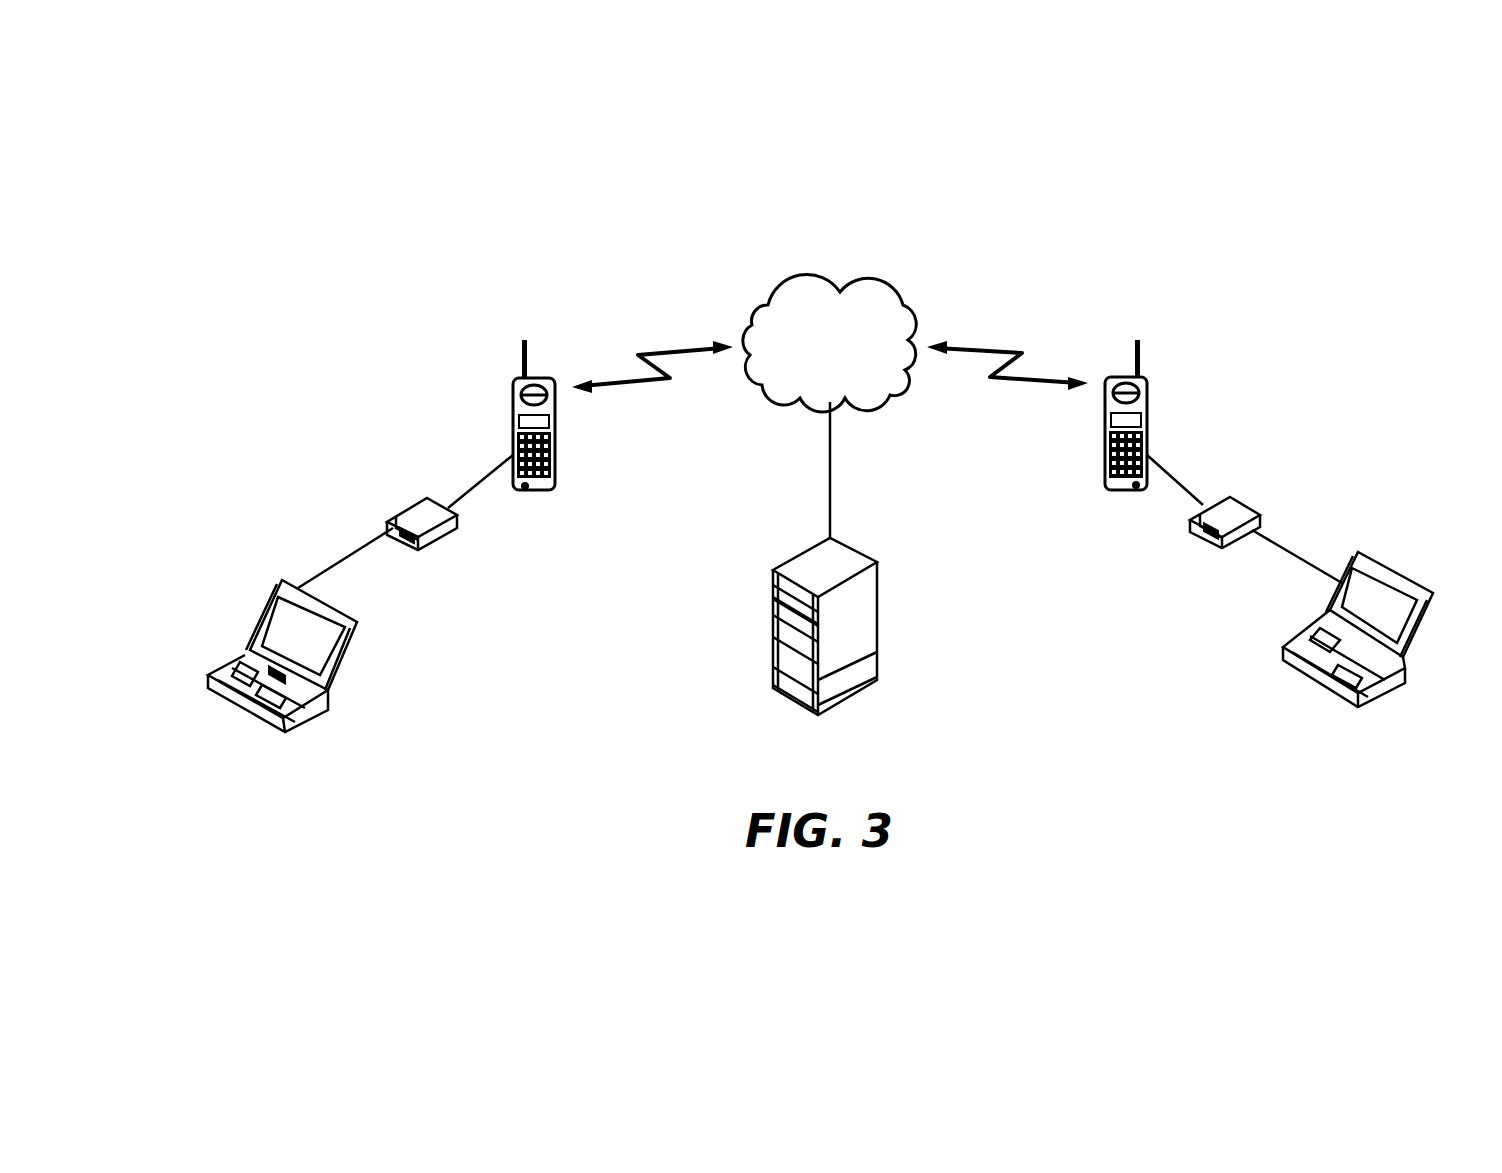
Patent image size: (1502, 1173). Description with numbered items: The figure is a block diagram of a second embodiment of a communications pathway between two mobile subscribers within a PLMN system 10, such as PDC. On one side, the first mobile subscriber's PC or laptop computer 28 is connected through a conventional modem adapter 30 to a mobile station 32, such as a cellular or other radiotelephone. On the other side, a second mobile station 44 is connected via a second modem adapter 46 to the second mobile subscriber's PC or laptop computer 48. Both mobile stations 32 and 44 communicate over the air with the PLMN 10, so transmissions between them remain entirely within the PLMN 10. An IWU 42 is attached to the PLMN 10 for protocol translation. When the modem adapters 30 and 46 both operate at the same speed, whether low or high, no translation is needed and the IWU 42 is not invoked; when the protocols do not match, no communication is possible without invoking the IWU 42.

The PLMN system 10 is at (757, 307).
The PC or laptop computer 28 is at (226, 668).
The modem adapter 30 is at (410, 503).
The mobile station 32 is at (513, 428).
The IWU 42 is at (878, 658).
The second mobile station 44 is at (1147, 425).
The second modem adapter 46 is at (1242, 503).
The PC or laptop computer 48 is at (1395, 568).